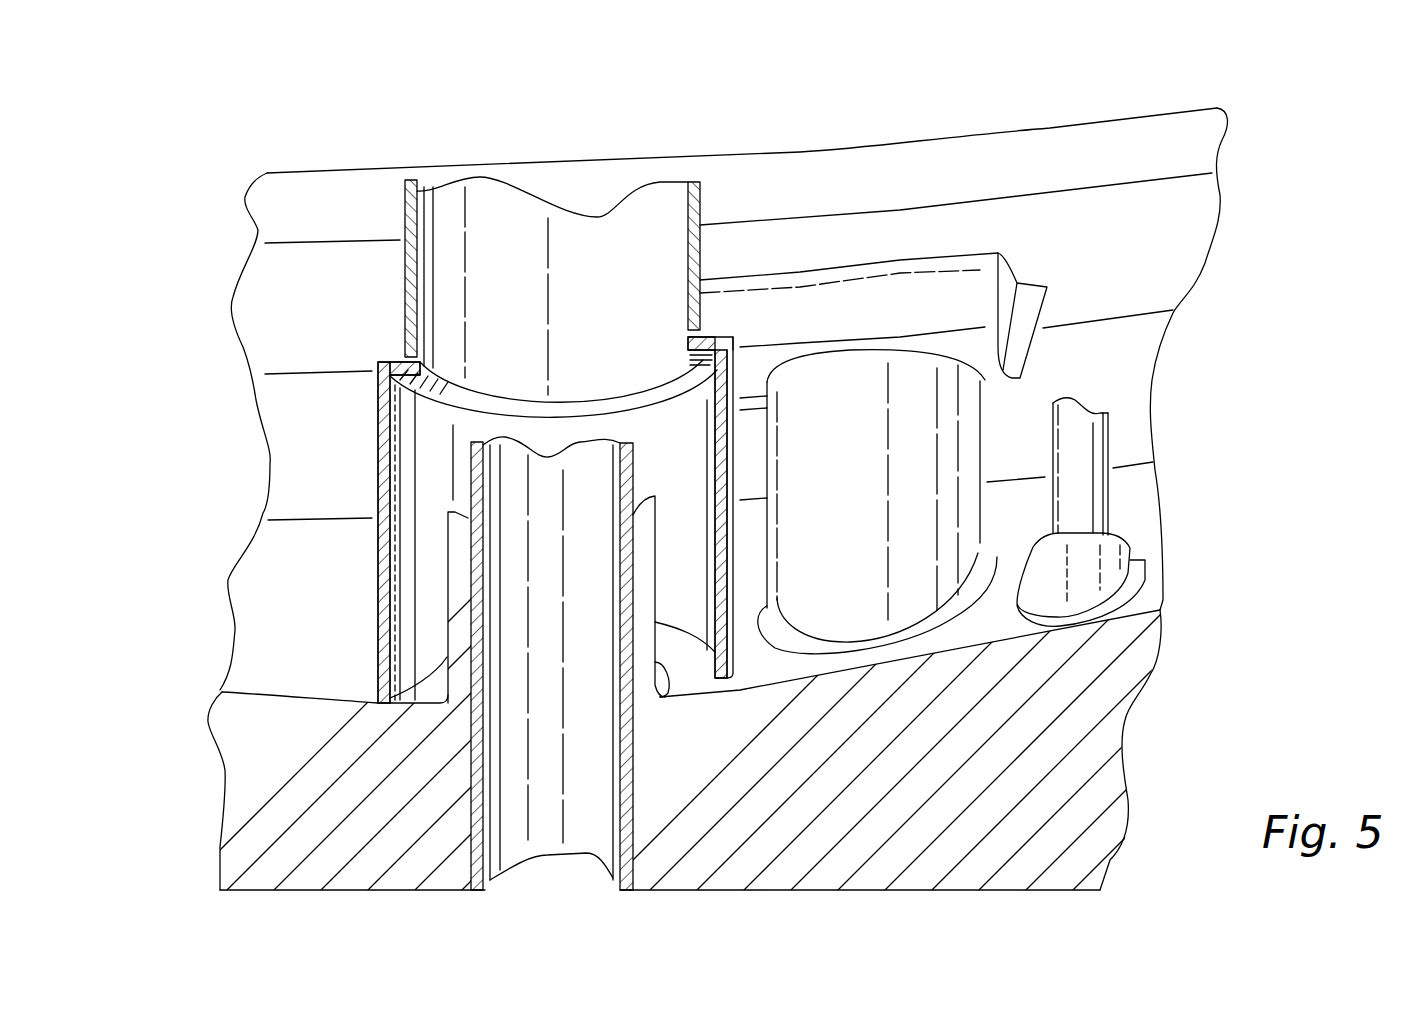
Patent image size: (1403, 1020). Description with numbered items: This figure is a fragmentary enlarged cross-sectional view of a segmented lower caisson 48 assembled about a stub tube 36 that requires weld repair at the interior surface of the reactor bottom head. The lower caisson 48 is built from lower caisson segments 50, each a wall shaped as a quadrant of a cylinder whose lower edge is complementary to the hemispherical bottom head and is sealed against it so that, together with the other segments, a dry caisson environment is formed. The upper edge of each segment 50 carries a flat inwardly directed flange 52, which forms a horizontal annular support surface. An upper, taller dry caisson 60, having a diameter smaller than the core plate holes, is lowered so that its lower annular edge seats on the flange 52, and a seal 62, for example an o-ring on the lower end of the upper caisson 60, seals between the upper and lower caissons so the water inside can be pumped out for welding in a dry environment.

The stub tube 36 is at (455, 602).
The segmented lower caisson 48 is at (368, 424).
The lower caisson segment 50 is at (732, 648).
The flange 52 is at (397, 357).
The upper caisson 60 is at (403, 217).
The seal 62 is at (700, 327).